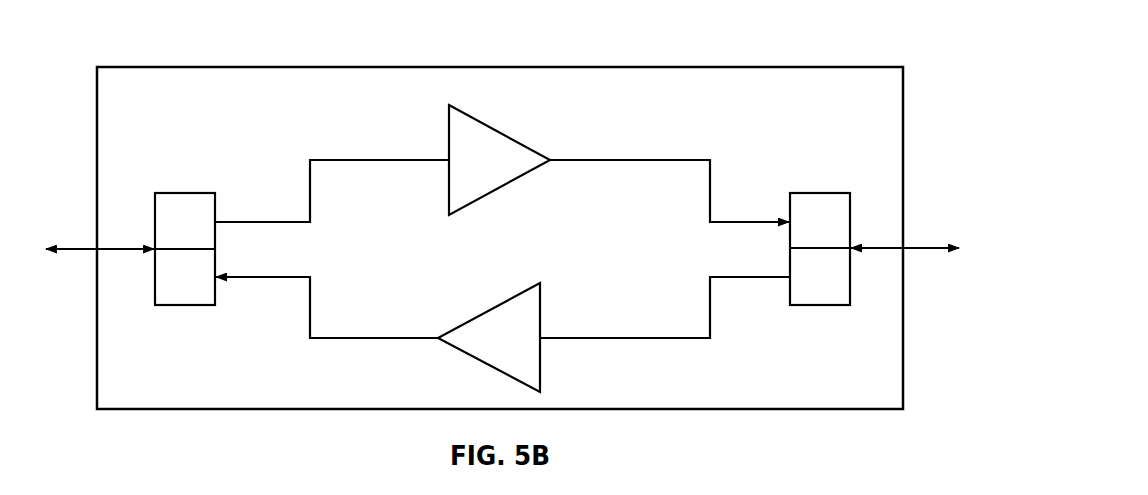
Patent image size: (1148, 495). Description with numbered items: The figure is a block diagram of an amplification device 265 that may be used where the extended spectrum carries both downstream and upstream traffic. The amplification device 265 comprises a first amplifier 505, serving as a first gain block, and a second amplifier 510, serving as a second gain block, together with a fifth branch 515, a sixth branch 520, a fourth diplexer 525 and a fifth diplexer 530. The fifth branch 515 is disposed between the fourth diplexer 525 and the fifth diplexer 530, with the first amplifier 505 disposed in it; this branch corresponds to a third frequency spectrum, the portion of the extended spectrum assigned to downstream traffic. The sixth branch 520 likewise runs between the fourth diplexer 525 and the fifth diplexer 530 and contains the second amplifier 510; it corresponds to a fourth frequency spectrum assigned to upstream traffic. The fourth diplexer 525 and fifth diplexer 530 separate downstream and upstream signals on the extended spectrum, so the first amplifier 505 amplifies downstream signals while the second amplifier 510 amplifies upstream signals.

The amplification device 265 is at (180, 67).
The first amplifier 505 is at (500, 133).
The second amplifier 510 is at (492, 305).
The fifth branch 515 is at (363, 160).
The sixth branch 520 is at (380, 338).
The fourth diplexer 525 is at (185, 193).
The fifth diplexer 530 is at (818, 193).